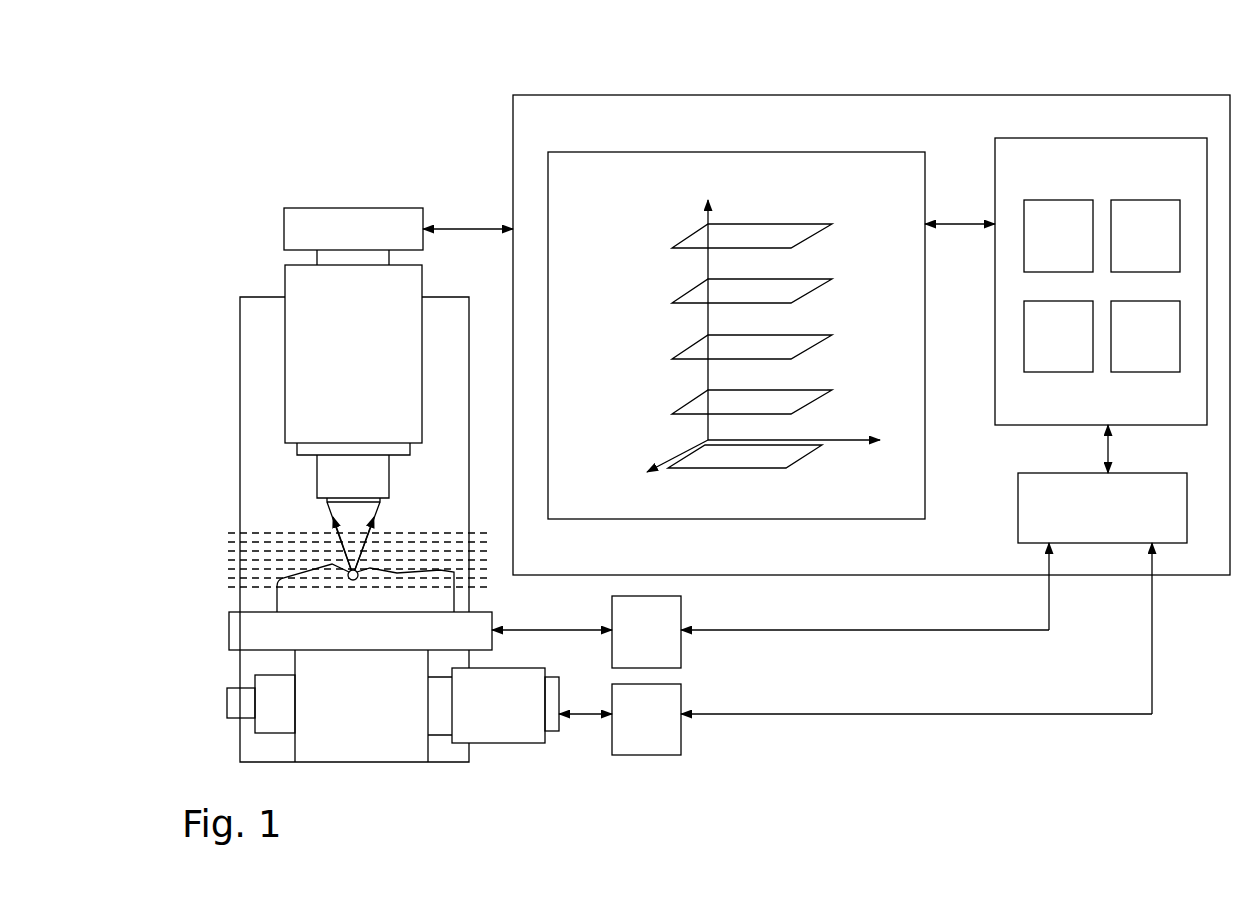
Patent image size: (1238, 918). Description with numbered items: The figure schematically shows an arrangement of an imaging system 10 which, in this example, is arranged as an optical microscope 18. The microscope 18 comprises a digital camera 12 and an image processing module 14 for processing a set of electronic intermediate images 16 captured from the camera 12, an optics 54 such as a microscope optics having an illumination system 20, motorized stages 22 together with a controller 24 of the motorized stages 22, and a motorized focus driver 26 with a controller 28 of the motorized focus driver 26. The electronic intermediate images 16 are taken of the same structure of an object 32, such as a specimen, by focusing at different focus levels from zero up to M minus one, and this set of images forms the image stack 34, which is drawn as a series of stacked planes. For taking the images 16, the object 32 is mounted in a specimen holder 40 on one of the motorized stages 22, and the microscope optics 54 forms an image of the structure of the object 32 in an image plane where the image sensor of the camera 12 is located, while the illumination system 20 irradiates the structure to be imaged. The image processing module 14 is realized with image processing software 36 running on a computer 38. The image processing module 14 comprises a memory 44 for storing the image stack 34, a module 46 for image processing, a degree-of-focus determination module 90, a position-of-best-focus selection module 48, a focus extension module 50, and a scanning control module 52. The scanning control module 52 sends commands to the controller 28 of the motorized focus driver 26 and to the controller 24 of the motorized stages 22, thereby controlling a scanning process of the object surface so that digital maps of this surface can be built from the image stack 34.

The imaging system 10 is at (447, 167).
The digital camera 12 is at (284, 225).
The image processing module 14 is at (871, 301).
The computer 38 is at (948, 95).
The electronic intermediate images 16 is at (759, 264).
The image stack 34 is at (761, 207).
The memory 44 is at (868, 152).
The image processing software 36 is at (1083, 138).
The module for image processing 46 is at (1073, 251).
The position-of-best-focus selection module 48 is at (1160, 251).
The focus extension module 50 is at (1073, 352).
The degree-of-focus determination module 90 is at (1160, 352).
The scanning control module 52 is at (1117, 522).
The controller of the motorized stages 24 is at (661, 647).
The controller of the motorized focus driver 28 is at (661, 735).
The optical microscope 18 is at (262, 412).
The illumination system 20 is at (262, 412).
The microscope optics 54 is at (285, 404).
The object 32 is at (277, 600).
The motorized stages 22 is at (294, 630).
The specimen holder 40 is at (229, 627).
The motorized focus driver 26 is at (227, 702).